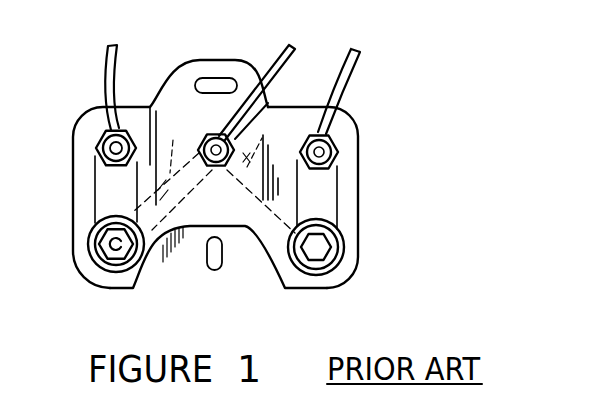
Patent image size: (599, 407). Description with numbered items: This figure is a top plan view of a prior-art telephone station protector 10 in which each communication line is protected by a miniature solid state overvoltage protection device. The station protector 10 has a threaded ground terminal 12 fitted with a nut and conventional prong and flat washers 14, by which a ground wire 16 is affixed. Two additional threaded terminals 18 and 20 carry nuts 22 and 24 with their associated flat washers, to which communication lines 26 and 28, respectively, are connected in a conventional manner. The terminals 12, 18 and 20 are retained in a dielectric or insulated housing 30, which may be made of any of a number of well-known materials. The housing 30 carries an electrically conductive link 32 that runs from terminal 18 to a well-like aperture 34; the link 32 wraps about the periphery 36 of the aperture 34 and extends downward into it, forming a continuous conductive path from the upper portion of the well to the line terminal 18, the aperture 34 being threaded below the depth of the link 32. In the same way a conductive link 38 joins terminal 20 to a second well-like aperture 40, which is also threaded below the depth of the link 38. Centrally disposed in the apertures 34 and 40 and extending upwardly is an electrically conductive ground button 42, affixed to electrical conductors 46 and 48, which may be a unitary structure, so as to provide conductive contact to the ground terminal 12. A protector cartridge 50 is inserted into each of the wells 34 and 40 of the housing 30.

The station protector 10 is at (221, 176).
The threaded ground terminal 12 is at (259, 70).
The nut and conventional prong and flat washers 14 is at (268, 103).
The ground wire 16 is at (285, 52).
The threaded terminal 18 is at (112, 150).
The threaded terminal 20 is at (325, 152).
The nut 22 is at (102, 140).
The nut 24 is at (330, 157).
The communication line 26 is at (107, 73).
The communication line 28 is at (349, 68).
The dielectric or insulated housing 30 is at (266, 278).
The electrically conductive link 32 is at (110, 192).
The well-like aperture 34 is at (110, 266).
The periphery 36 is at (103, 269).
The conductive link 38 is at (325, 204).
The well-like aperture 40 is at (326, 262).
The electrically conductive ground button 42 is at (88, 242).
The electrical conductor 46 is at (171, 156).
The electrical conductor 48 is at (271, 160).
The protector cartridge 50 is at (127, 250).